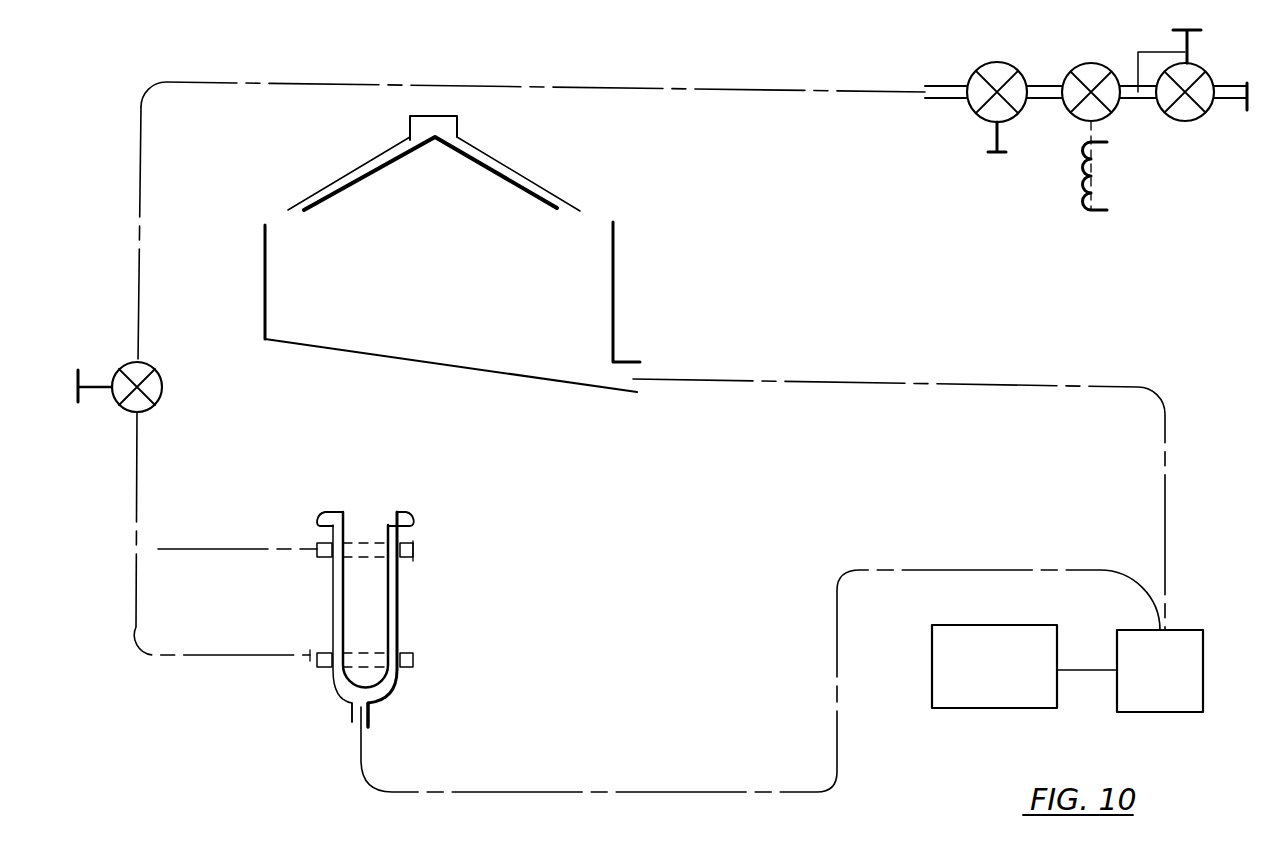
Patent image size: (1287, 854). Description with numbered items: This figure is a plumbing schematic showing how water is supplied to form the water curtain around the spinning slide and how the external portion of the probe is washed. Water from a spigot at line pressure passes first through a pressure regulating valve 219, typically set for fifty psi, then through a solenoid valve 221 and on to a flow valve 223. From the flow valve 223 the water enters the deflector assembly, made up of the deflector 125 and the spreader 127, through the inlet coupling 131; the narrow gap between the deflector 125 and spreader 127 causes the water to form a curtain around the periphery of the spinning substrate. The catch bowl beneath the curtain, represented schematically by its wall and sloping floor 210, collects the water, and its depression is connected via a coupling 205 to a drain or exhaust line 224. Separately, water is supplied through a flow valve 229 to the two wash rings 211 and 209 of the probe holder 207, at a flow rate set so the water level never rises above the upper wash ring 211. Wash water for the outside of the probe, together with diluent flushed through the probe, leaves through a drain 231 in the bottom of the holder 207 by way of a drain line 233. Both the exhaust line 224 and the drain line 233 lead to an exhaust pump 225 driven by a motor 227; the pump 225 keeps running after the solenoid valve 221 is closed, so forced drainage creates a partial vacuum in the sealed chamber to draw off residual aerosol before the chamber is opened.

The deflector 125 is at (535, 182).
The spreader 127 is at (507, 183).
The coupling 131 is at (433, 116).
The coupling 205 is at (638, 362).
The holder 207 is at (400, 592).
The wash ring 209 is at (413, 660).
The chamber floor 210 is at (406, 361).
The wash ring 211 is at (413, 550).
The pressure regulating valve 219 is at (1206, 74).
The solenoid valve 221 is at (1091, 63).
The flow valve 223 is at (984, 64).
The exhaust line 224 is at (822, 382).
The exhaust pump 225 is at (1192, 630).
The motor 227 is at (1010, 625).
The flow valve 229 is at (157, 388).
The drain 231 is at (370, 712).
The drain line 233 is at (618, 793).